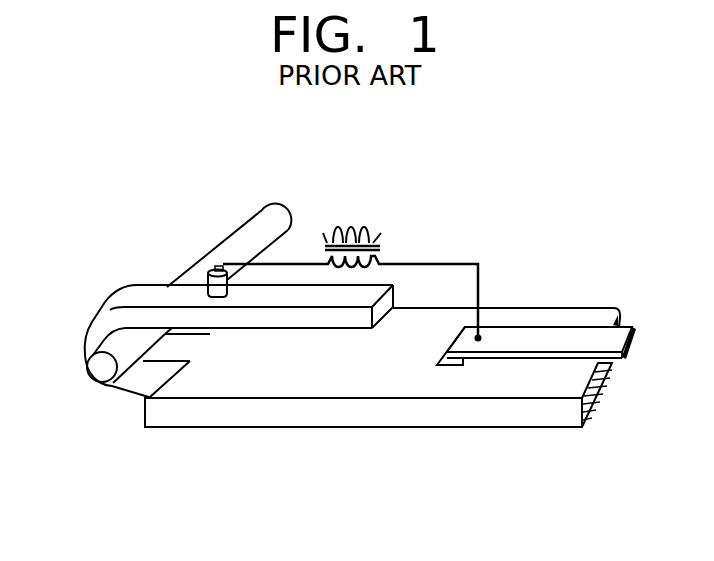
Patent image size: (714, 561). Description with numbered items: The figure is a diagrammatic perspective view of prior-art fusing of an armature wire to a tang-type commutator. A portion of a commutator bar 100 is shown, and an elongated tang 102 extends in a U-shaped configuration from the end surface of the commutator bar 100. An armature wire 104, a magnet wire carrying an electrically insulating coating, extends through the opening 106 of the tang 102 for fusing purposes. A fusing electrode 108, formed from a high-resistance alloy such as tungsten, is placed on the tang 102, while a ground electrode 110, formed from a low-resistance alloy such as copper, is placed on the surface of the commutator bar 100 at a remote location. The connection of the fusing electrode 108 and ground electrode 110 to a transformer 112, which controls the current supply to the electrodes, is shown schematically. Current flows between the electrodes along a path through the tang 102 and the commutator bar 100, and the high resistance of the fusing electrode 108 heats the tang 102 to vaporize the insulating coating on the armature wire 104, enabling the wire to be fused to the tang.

The commutator bar 100 is at (490, 415).
The tang 102 is at (104, 285).
The armature wire 104 is at (100, 368).
The opening 106 is at (210, 334).
The fusing electrode 108 is at (210, 268).
The ground electrode 110 is at (548, 337).
The transformer 112 is at (380, 247).